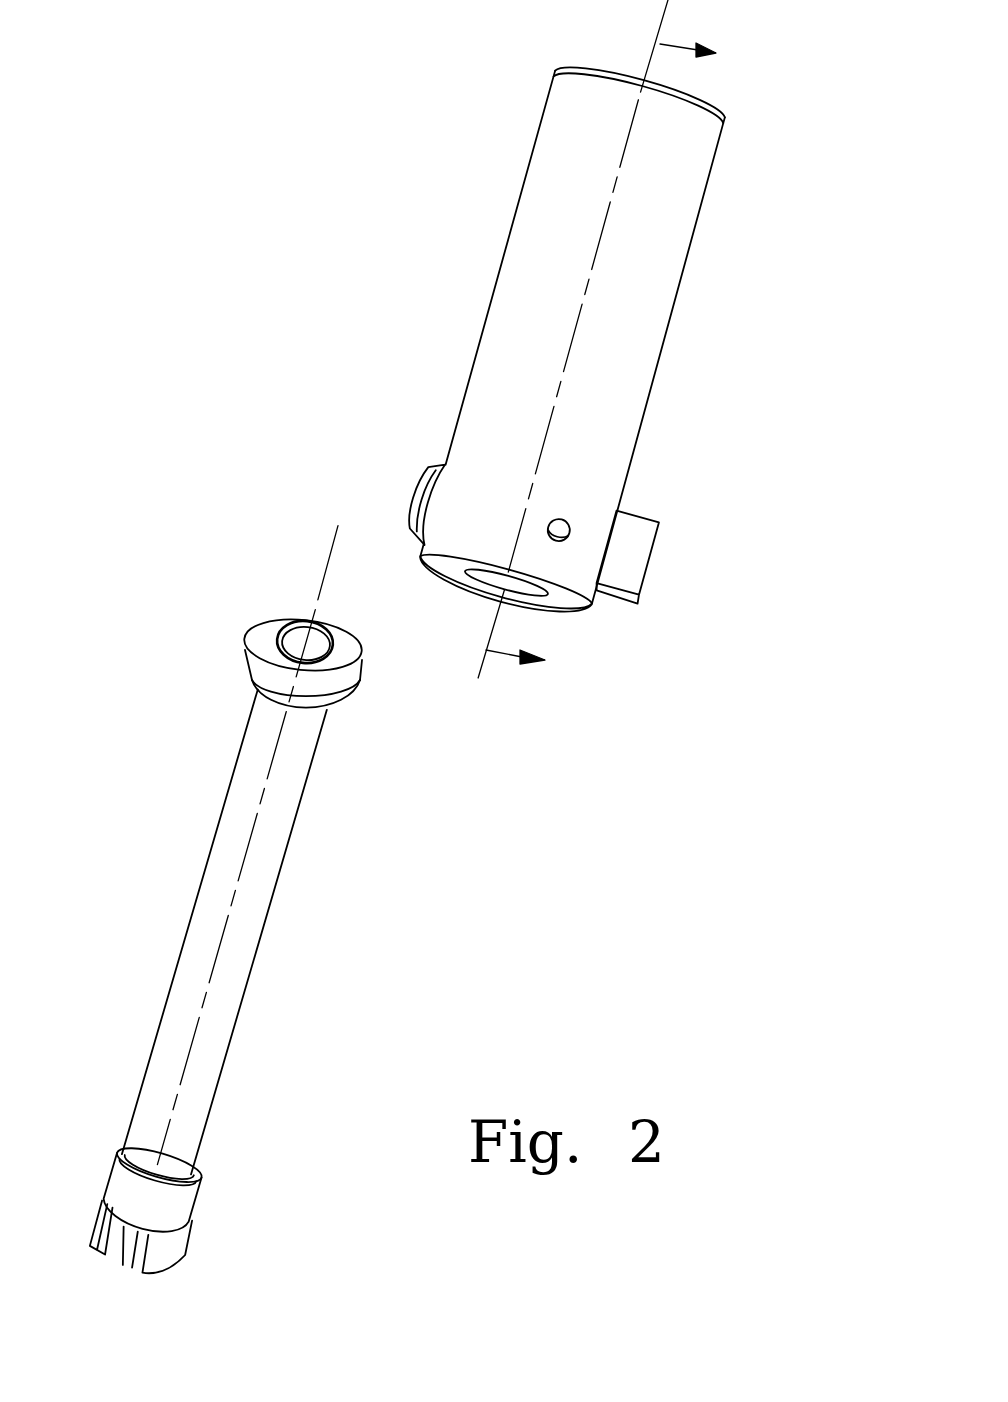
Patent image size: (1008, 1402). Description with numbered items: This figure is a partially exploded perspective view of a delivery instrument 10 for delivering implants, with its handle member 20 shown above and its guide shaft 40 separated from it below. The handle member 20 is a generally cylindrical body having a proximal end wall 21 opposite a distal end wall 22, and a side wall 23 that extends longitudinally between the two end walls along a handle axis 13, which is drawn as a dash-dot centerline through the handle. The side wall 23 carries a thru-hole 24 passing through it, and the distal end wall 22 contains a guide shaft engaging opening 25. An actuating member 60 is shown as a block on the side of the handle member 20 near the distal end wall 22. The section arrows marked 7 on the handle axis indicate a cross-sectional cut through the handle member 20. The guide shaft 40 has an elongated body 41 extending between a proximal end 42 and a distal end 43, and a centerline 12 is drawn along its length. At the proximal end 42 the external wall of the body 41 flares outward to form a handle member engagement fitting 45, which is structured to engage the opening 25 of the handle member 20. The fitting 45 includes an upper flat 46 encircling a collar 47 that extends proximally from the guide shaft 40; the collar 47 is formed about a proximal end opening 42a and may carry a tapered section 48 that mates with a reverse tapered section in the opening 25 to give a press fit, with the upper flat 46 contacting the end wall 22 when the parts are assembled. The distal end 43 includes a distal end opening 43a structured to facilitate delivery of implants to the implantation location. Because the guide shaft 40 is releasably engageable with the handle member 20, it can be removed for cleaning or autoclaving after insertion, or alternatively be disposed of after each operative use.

The delivery instrument 10 is at (205, 146).
The shaft longitudinal axis 12 is at (333, 542).
The handle axis 13 is at (663, 25).
The handle member 20 is at (733, 183).
The proximal end wall 21 is at (597, 67).
The distal end wall 22 is at (575, 608).
The side wall 23 is at (552, 180).
The thru-hole 24 is at (560, 519).
The guide shaft engaging opening 25 is at (515, 597).
The guide shaft 40 is at (165, 937).
The elongated body 41 is at (273, 893).
The proximal end 42 is at (340, 697).
The proximal end opening 42a is at (345, 642).
The distal end 43 is at (190, 1227).
The distal end opening 43a is at (118, 1243).
The handle member engagement fitting 45 is at (250, 686).
The upper flat 46 is at (255, 650).
The collar 47 is at (290, 620).
The tapered section 48 is at (243, 653).
The actuating member 60 is at (641, 516).
The section line 7- 7 is at (608, 364).